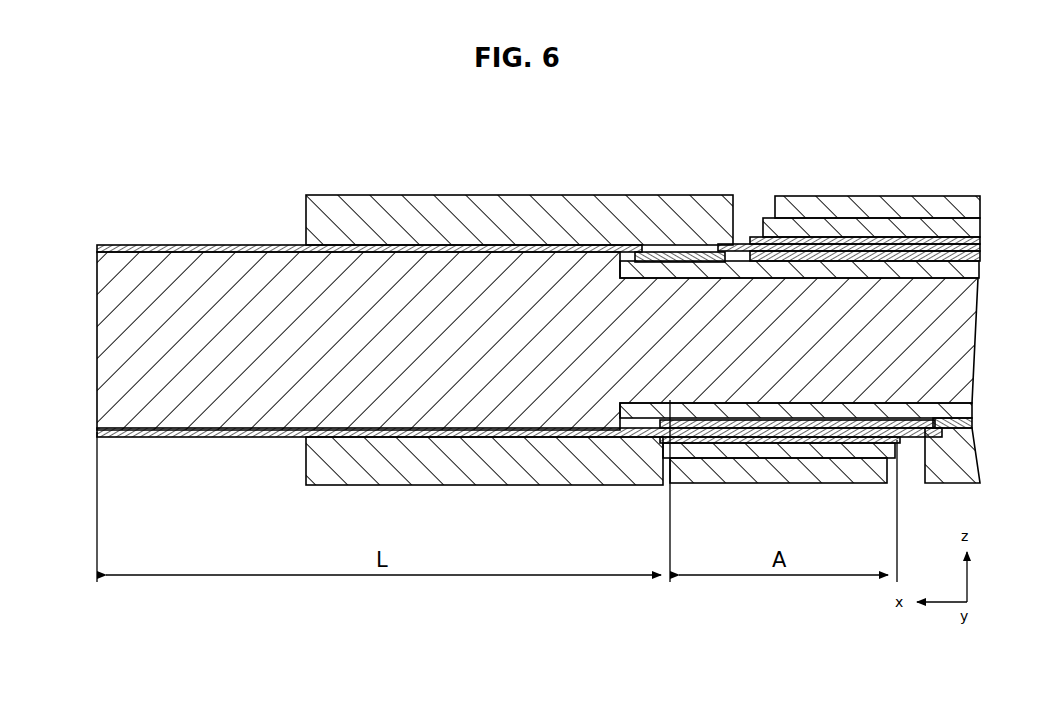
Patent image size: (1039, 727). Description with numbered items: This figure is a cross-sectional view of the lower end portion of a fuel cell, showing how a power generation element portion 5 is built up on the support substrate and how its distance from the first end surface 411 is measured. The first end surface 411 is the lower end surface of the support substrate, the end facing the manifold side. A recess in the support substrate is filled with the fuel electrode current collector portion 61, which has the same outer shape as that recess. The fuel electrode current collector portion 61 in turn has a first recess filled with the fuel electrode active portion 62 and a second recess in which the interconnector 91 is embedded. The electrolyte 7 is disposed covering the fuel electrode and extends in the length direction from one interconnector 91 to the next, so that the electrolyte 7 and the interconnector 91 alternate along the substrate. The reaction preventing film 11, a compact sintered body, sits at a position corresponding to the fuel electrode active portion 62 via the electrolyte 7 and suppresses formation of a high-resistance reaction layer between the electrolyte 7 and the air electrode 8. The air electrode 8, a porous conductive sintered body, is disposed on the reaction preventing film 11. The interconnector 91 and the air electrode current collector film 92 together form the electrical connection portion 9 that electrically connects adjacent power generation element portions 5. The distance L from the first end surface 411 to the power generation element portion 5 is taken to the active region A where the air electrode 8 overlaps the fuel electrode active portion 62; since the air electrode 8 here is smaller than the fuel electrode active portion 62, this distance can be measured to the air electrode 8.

The first end surface 411 is at (97, 403).
The electrolyte 7 is at (159, 245).
The electrical connection portion 9 is at (710, 153).
The interconnector 91 is at (660, 252).
The air electrode current collector film 92 is at (706, 195).
The fuel electrode current collector portion 61 is at (742, 262).
The fuel electrode active portion 62 is at (780, 244).
The reaction preventing film 11 is at (889, 237).
The air electrode 8 is at (921, 219).
The power generation element portion 5 is at (931, 207).